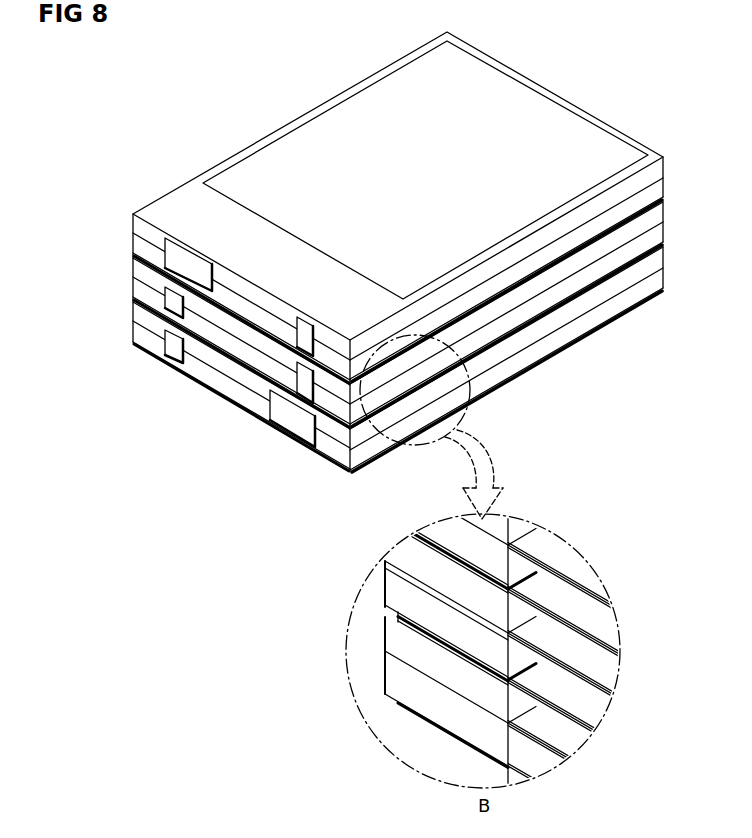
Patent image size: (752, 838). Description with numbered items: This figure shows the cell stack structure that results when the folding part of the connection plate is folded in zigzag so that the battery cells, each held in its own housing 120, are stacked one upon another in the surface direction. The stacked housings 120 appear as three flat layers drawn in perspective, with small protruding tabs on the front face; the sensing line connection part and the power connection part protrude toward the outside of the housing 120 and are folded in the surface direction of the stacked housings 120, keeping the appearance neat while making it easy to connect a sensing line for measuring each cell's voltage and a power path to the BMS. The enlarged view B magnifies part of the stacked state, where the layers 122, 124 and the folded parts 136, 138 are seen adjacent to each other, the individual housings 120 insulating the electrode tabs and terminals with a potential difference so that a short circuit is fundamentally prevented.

The housing 120 is at (145, 230).
The first layer 122 is at (388, 612).
The second layer 124 is at (412, 562).
The first protrusion 136 is at (302, 334).
The second protrusion 138 is at (173, 257).